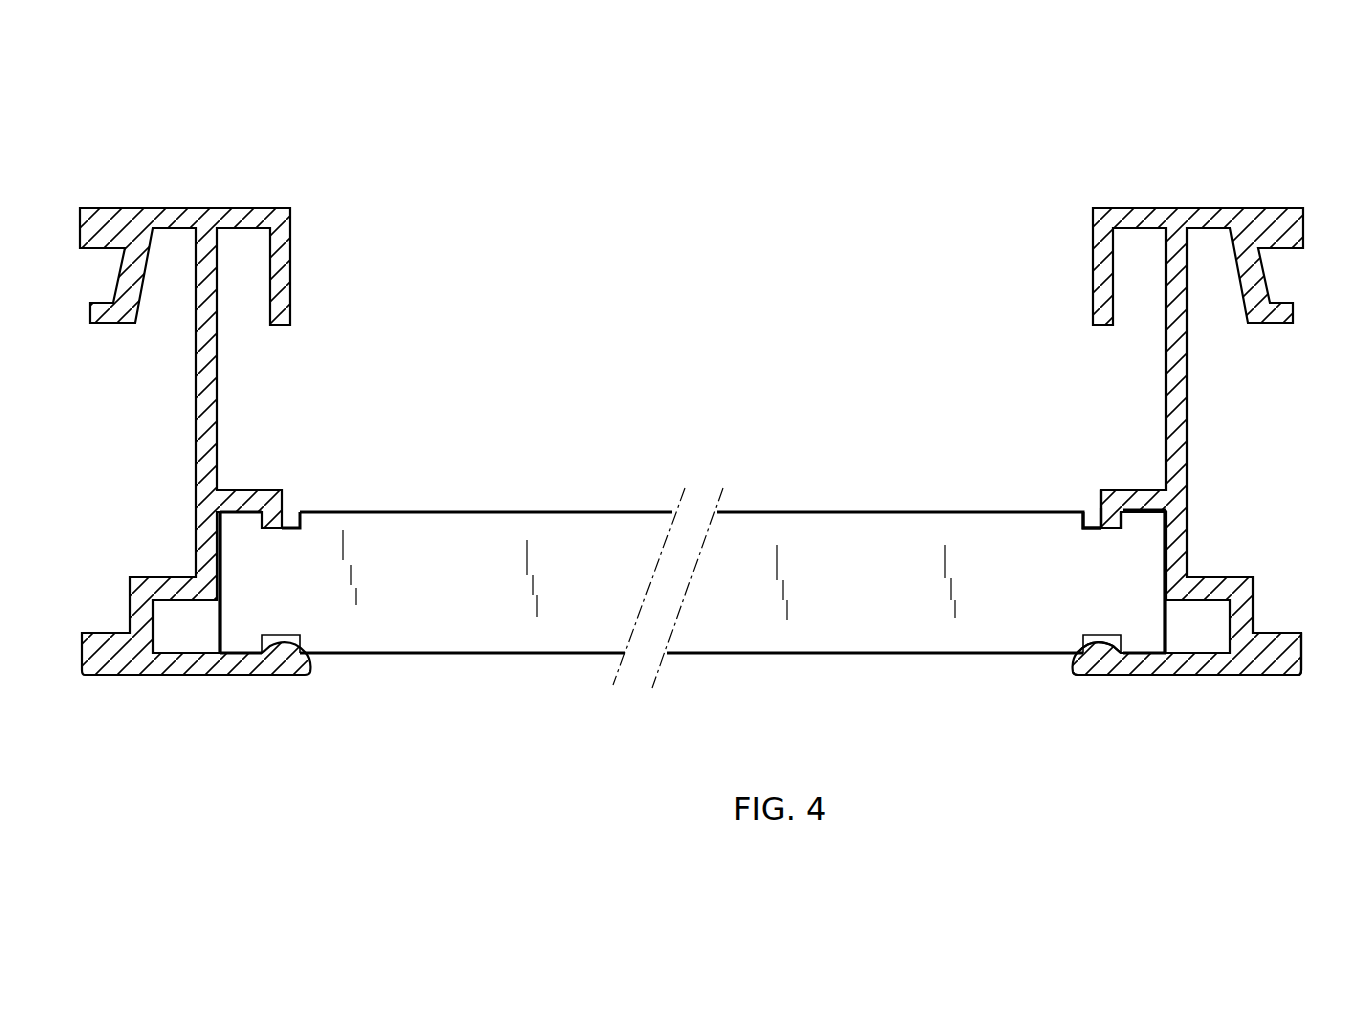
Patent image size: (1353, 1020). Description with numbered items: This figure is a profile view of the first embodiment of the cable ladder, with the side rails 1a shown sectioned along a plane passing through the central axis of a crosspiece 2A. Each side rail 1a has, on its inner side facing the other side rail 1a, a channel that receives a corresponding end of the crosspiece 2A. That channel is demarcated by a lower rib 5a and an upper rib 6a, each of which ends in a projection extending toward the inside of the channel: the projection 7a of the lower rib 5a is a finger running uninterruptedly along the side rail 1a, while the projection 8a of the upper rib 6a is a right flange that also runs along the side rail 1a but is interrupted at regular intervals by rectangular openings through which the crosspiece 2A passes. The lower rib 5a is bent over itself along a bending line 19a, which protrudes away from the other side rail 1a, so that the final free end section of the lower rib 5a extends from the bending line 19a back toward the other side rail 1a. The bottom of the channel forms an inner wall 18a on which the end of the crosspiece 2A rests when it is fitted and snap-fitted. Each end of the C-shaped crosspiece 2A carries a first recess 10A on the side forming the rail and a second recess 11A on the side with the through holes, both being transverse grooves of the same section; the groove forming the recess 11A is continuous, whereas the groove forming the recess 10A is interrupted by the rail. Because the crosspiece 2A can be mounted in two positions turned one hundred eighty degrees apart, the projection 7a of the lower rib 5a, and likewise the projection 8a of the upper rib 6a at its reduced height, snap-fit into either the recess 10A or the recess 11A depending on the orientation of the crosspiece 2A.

The side rail 1a is at (195, 207).
The crosspiece 2A is at (777, 510).
The lower rib 5a is at (1175, 674).
The upper rib 6a is at (1147, 488).
The projection 7a is at (1115, 672).
The projection 8a is at (1098, 508).
The first recess 10A is at (1098, 512).
The second recess 11A is at (1090, 668).
The inner wall 18a is at (1170, 537).
The bending line 19a is at (1292, 674).